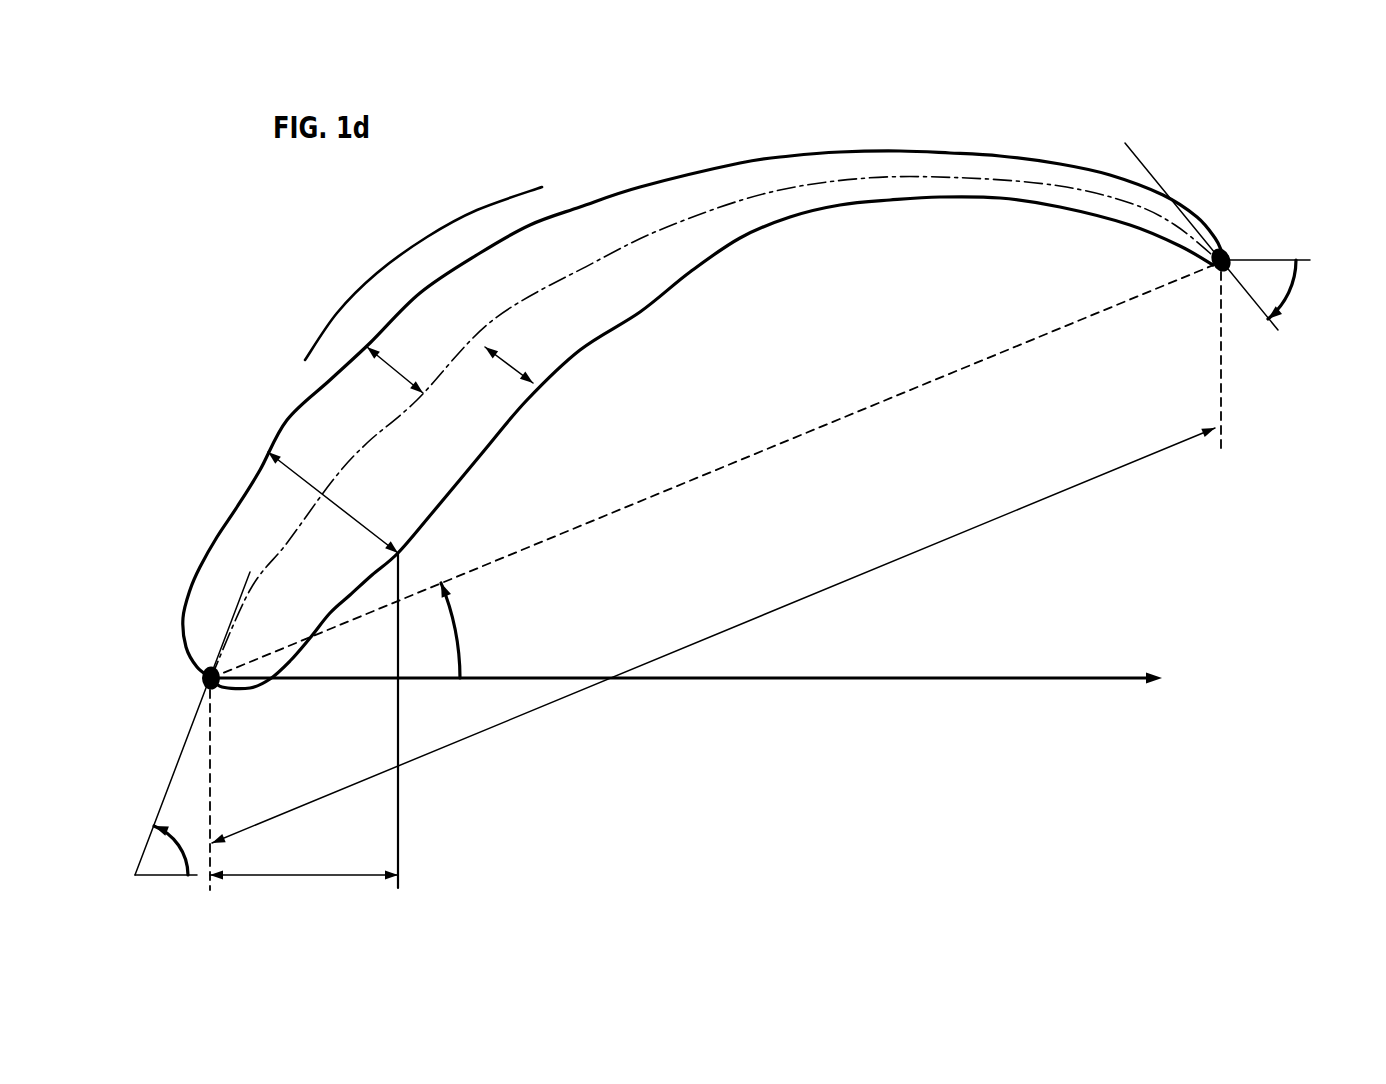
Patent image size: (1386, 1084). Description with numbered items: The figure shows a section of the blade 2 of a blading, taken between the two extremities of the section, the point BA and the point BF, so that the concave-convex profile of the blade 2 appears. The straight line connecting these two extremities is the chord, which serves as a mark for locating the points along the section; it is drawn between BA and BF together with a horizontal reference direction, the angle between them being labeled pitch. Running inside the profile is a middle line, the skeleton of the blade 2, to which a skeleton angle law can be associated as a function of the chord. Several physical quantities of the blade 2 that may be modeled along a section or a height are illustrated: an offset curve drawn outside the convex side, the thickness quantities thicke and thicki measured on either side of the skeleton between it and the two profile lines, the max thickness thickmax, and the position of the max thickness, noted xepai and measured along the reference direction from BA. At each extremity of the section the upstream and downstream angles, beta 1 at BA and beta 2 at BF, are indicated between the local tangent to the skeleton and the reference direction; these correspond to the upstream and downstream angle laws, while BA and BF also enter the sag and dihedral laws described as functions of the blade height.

The blade 2 is at (714, 143).
The element skeleton is at (714, 427).
The offset curve of suction surface offset is at (513, 253).
The external thickness thicke is at (407, 370).
The internal thickness thicki is at (521, 360).
The max thickness thickmax is at (346, 502).
The element chord is at (715, 576).
The position of the max thickness xepai is at (304, 863).
The pitch angle pitch is at (457, 638).
The upstream angle beta 1 is at (186, 848).
The downstream angle beta 2 is at (1297, 288).
The element BA is at (192, 683).
The element BF is at (1235, 254).